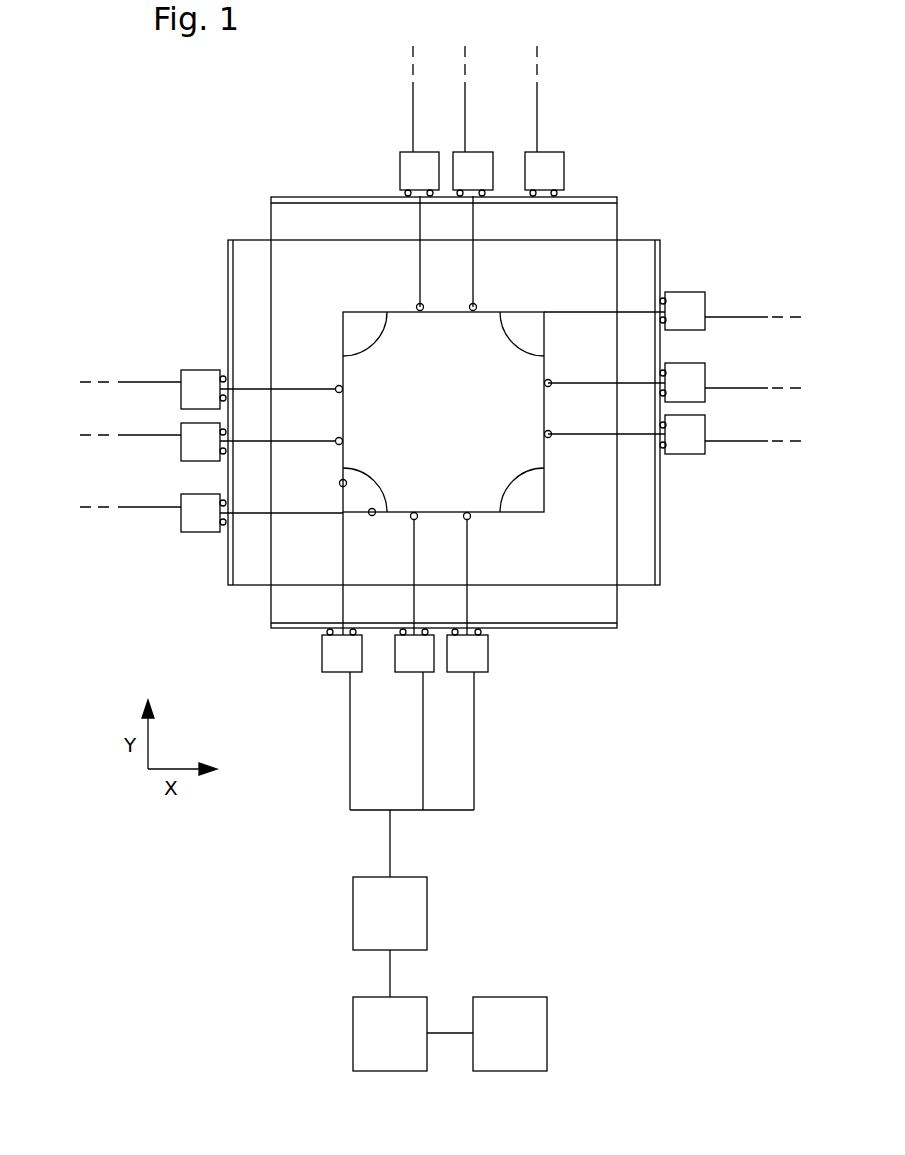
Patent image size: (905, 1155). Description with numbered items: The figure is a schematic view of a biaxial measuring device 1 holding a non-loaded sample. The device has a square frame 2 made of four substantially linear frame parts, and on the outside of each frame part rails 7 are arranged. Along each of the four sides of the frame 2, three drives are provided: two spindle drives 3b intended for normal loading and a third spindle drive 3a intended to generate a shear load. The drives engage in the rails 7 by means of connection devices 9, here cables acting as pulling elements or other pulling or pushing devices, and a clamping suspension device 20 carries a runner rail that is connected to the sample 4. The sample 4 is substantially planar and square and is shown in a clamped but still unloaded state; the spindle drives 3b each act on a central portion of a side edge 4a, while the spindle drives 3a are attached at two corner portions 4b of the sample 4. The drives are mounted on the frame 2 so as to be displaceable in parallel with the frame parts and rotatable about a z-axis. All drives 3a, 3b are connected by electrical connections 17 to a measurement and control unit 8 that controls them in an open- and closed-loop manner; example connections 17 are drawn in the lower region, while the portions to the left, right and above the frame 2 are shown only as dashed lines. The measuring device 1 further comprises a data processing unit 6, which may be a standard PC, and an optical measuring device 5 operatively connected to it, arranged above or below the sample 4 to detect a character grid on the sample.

The measuring device 1 is at (254, 152).
The frame 2 is at (295, 221).
The spindle drive 3a is at (552, 158).
The spindle drive 3b is at (423, 158).
The sample 4 is at (456, 418).
The side edge 4a is at (544, 468).
The corner portion 4b is at (530, 332).
The optical measuring device 5 is at (520, 1037).
The data processing unit 6 is at (375, 1025).
The rail 7 is at (228, 266).
The measurement and control unit 8 is at (408, 915).
The connection device 9 is at (417, 264).
The electrical connection 17 is at (412, 102).
The connection device/suspension device 20 is at (339, 386).